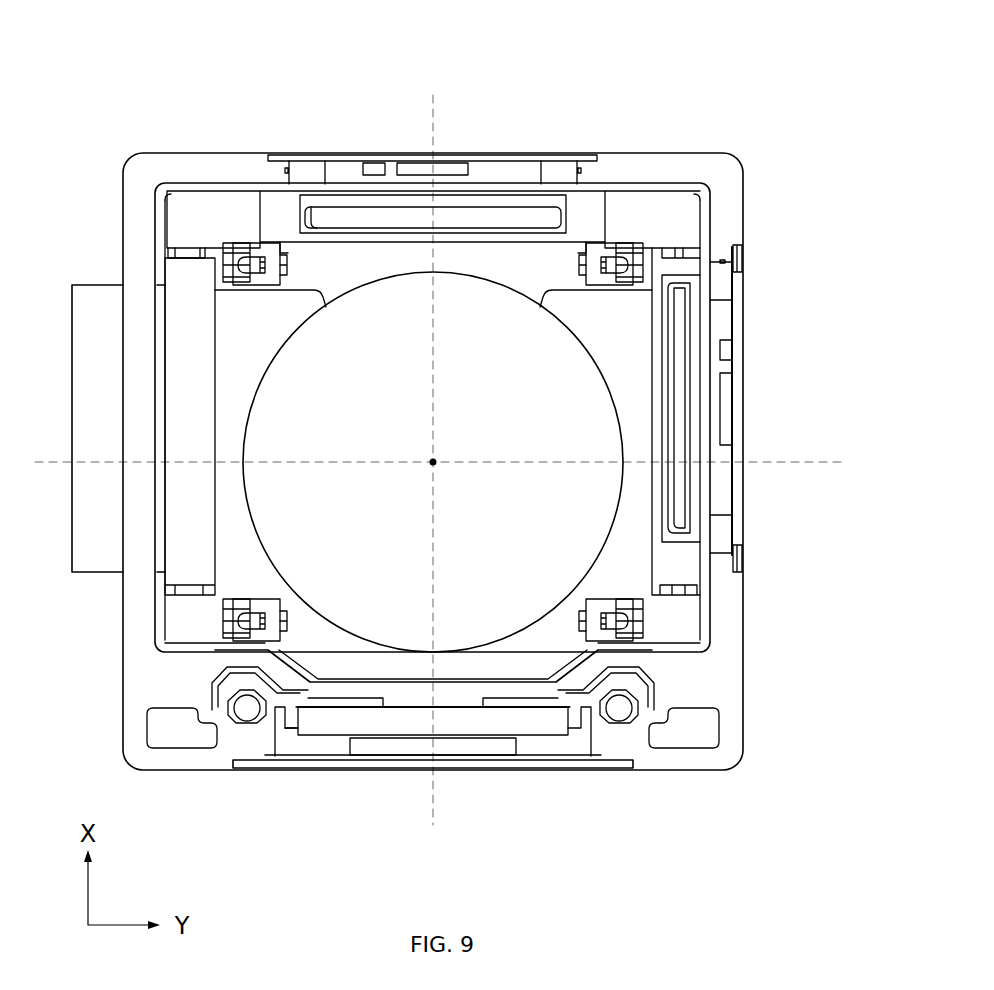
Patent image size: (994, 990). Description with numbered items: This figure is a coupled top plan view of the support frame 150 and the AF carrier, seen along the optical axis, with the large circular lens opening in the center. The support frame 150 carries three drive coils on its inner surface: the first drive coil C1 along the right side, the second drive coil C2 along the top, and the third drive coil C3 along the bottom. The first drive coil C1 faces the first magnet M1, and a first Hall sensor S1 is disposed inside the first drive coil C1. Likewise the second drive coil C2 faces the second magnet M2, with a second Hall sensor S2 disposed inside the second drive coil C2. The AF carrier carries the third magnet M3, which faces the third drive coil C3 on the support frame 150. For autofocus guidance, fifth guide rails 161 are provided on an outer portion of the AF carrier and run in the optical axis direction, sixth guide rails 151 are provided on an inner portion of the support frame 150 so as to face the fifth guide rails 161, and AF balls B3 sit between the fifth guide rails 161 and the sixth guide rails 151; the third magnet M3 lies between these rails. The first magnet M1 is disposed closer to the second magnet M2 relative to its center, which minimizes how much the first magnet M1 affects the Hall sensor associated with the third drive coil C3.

The support frame 150 is at (407, 461).
The second drive coil C2 is at (300, 178).
The second Hall sensor S2 is at (455, 170).
The second magnet M2 is at (515, 205).
The first drive coil C1 is at (722, 283).
The first Hall sensor S1 is at (727, 407).
The first magnet M1 is at (692, 495).
The fifth guide rails 161 is at (657, 708).
The AF balls B3 is at (248, 718).
The third magnet M3 is at (388, 724).
The third drive coil C3 is at (498, 748).
The sixth guide rails 151 is at (630, 718).